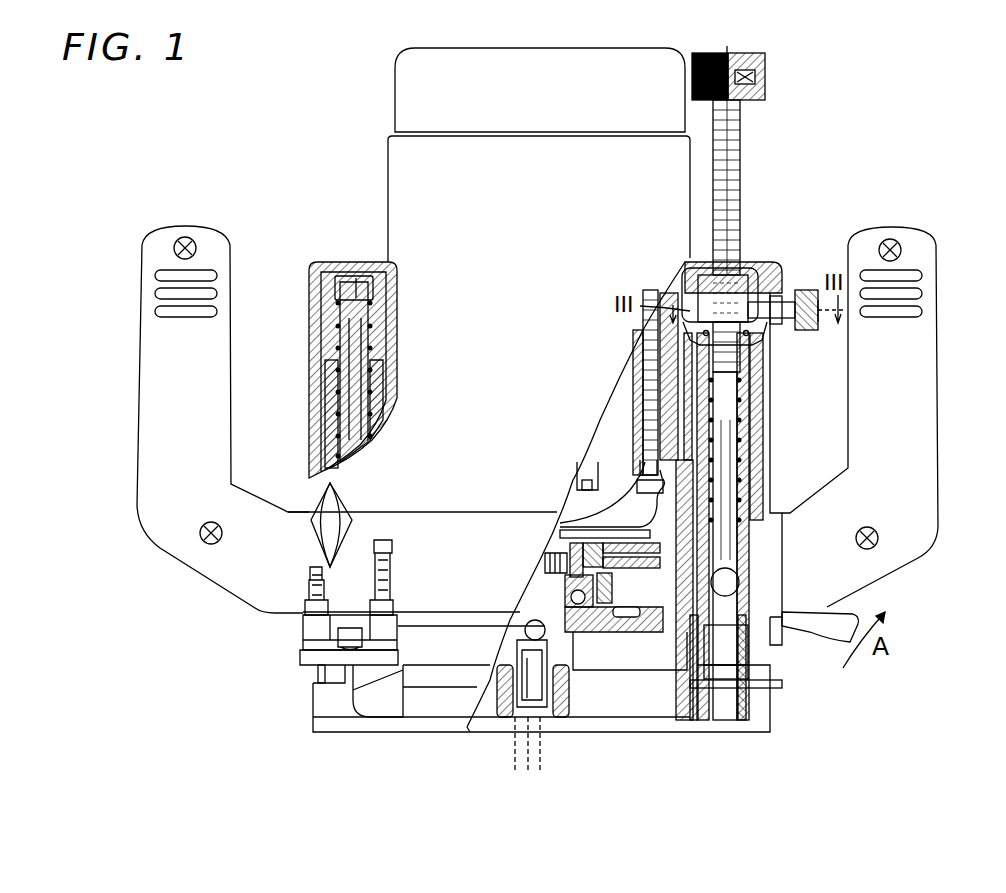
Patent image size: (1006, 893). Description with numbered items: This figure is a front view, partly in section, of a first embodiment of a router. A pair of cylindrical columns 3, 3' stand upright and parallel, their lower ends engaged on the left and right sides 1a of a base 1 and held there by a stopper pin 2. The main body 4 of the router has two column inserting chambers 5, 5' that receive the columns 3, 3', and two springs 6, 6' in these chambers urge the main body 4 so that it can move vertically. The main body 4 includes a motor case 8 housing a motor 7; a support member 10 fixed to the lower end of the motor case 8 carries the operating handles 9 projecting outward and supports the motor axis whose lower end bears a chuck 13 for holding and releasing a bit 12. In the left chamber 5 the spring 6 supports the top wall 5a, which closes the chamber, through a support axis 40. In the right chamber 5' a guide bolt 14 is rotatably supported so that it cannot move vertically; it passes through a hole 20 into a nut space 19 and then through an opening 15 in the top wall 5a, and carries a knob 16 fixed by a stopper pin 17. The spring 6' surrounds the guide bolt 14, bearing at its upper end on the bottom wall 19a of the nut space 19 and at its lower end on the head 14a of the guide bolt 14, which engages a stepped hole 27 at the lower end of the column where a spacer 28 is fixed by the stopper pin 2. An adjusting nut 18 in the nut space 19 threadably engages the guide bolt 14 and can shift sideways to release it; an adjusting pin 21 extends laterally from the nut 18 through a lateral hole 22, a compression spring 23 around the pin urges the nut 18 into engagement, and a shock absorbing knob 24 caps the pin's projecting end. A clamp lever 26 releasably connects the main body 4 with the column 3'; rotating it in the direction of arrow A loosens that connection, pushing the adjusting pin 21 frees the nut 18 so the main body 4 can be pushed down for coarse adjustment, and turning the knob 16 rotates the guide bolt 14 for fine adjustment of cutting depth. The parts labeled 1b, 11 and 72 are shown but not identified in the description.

The base 1 is at (313, 708).
The left and right sides of the base 1a is at (318, 676).
The base bottom surface 1b is at (467, 730).
The stopper pin 2 is at (776, 684).
The cylindrical column 3 is at (325, 414).
The cylindrical column 3' is at (753, 526).
The main body 4 is at (395, 96).
The column inserting chamber 5 is at (320, 372).
The column inserting chamber 5' is at (641, 382).
The top wall 5a is at (358, 264).
The spring 6 is at (321, 296).
The spring 6' is at (759, 450).
The motor 7 is at (577, 462).
The motor case 8 is at (388, 162).
The operating handle 9 is at (138, 434).
The support member 10 is at (640, 622).
The bearing 11 is at (620, 640).
The bit 12 is at (553, 768).
The chuck 13 is at (560, 690).
The guide bolt 14 is at (756, 395).
The head of the guide bolt 14a is at (715, 640).
The opening 15 is at (742, 270).
The knob 16 is at (765, 62).
The stopper pin 17 is at (760, 77).
The adjusting nut 18 is at (705, 300).
The nut space 19 is at (690, 285).
The bottom wall of the nut space 19a is at (698, 334).
The hole 20 is at (764, 352).
The adjusting pin 21 is at (800, 300).
The lateral hole 22 is at (770, 295).
The compression spring 23 is at (785, 328).
The shock absorbing knob 24 is at (822, 325).
The clamp lever 26 is at (822, 636).
The hole 27 is at (697, 718).
The spacer 28 is at (740, 718).
The support axis 40 is at (349, 332).
The gear 72 is at (530, 606).